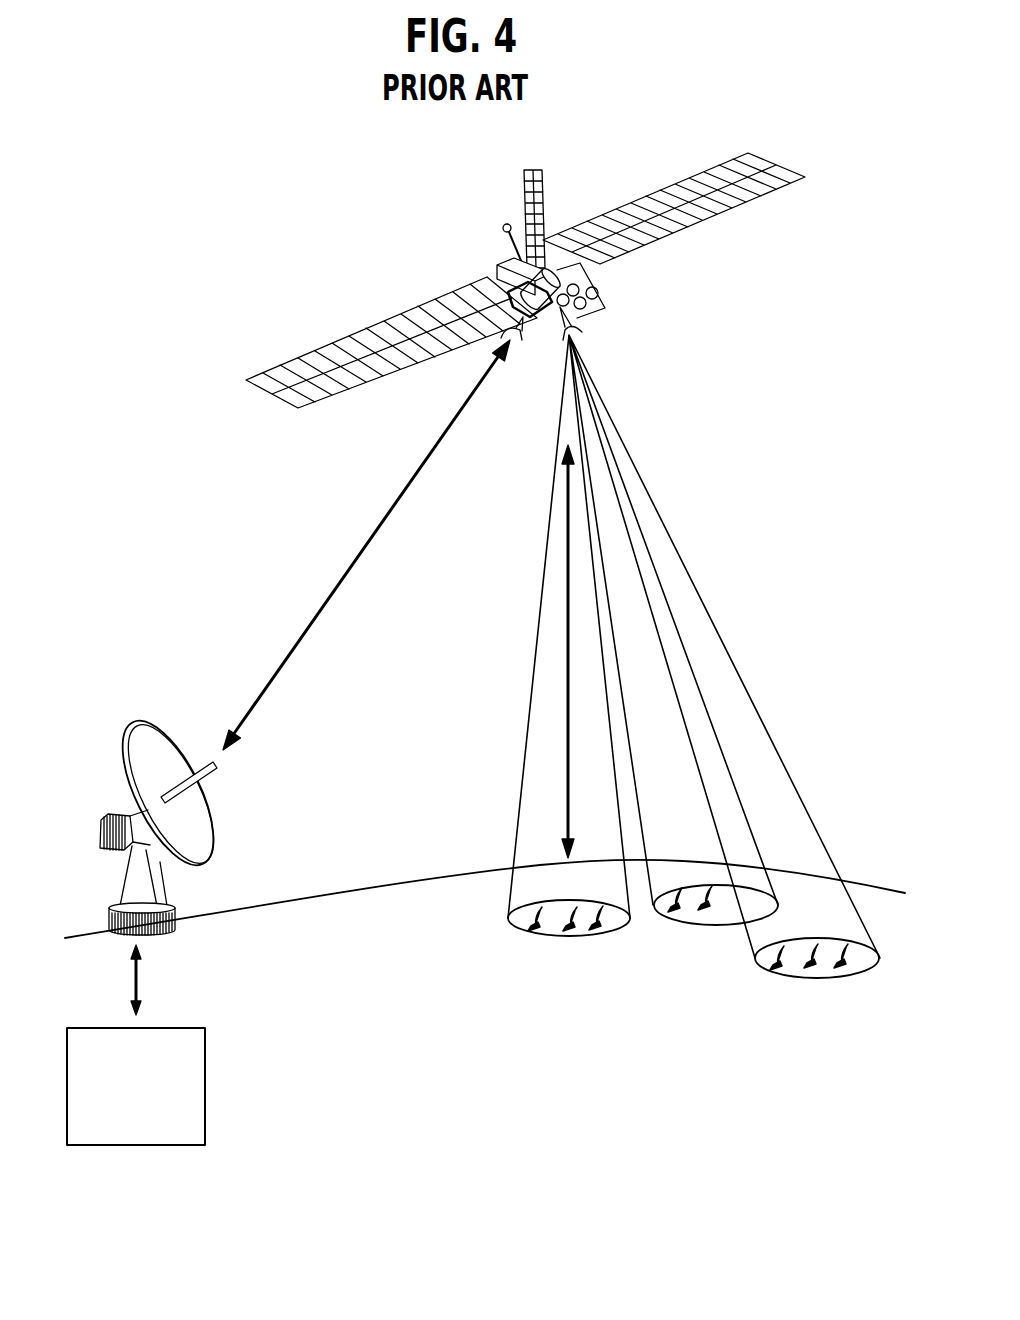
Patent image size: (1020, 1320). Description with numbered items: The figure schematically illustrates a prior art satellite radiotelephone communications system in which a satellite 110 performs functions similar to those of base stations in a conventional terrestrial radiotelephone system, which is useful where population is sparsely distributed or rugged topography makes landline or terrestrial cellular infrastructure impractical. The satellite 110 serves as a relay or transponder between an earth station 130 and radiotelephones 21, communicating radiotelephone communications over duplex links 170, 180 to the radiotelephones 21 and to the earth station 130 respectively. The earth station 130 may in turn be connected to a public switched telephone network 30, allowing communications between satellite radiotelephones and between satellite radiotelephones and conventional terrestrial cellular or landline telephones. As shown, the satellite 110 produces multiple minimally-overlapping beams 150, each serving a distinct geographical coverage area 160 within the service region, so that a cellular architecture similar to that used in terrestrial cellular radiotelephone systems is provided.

The satellite 110 is at (525, 270).
The minimally-overlapping beams 150 is at (677, 585).
The duplex link 170 is at (565, 705).
The duplex link 180 is at (335, 590).
The earth station 130 is at (170, 893).
The public switched telephone network 30 is at (205, 1037).
The geographical coverage areas 160 is at (508, 927).
The radiotelephones 21 is at (708, 878).